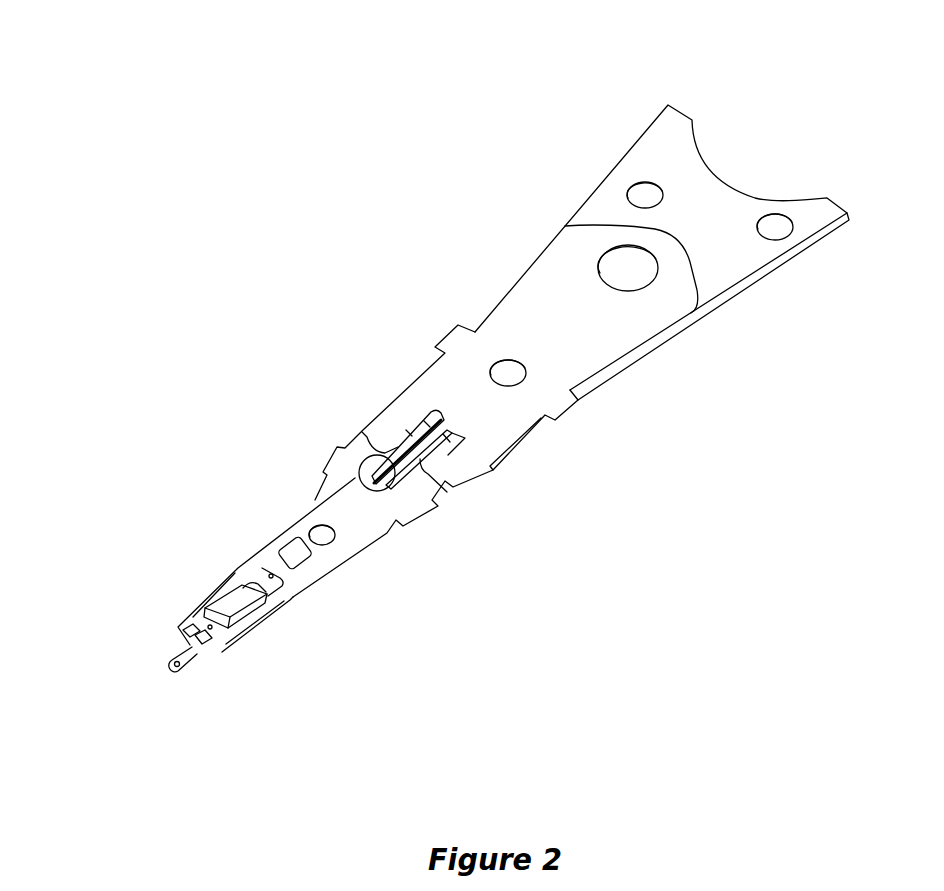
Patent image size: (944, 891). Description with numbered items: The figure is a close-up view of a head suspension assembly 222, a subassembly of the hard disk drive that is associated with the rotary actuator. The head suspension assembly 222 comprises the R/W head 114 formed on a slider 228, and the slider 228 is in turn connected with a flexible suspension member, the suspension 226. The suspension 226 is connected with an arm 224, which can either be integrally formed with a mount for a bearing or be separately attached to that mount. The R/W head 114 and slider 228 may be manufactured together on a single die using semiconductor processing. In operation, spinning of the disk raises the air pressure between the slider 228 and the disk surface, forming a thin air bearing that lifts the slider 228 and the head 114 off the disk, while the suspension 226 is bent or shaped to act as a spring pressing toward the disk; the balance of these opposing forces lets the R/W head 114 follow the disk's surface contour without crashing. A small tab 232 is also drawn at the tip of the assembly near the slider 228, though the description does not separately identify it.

The head suspension assembly 222 is at (290, 368).
The arm 224 is at (660, 152).
The suspension 226 is at (350, 512).
The slider 228 is at (190, 565).
The limiter tab 232 is at (180, 650).
The R/W head 114 is at (228, 607).